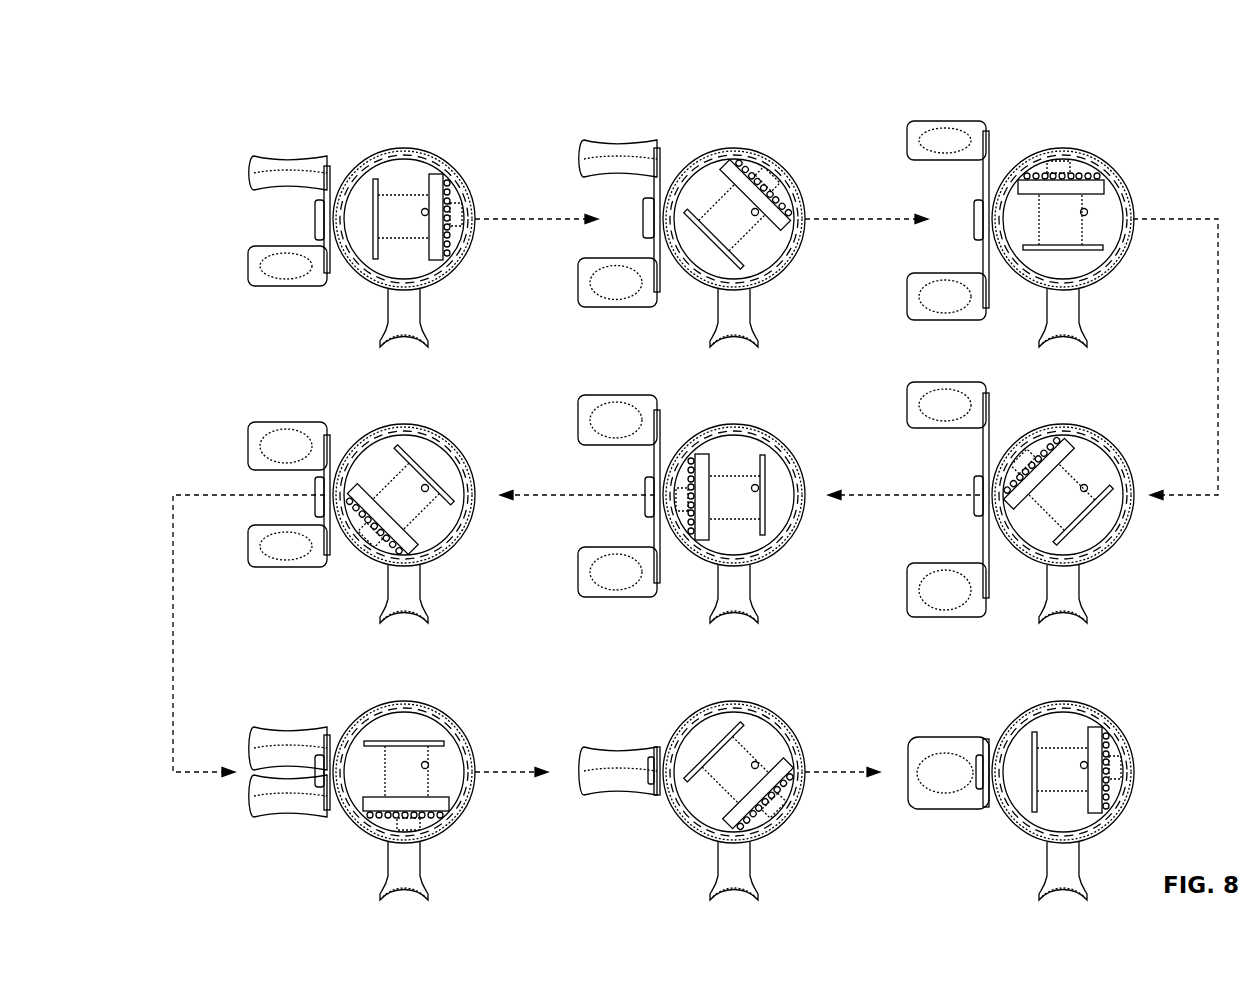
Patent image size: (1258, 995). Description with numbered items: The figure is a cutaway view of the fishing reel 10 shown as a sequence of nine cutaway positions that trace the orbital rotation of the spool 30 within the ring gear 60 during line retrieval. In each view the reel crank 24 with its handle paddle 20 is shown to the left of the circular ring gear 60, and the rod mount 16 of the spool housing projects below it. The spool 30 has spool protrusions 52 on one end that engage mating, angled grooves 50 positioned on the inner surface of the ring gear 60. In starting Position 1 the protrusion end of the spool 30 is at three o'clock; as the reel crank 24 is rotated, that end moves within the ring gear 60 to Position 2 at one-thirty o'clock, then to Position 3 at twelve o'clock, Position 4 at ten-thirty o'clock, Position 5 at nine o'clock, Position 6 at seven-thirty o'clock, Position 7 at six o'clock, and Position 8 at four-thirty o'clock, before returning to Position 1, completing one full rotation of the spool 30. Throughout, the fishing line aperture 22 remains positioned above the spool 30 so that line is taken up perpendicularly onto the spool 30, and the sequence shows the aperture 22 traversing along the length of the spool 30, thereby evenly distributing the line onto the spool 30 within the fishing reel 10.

The Position 1 is at (488, 288).
The Position 2 is at (798, 174).
The Position 3 is at (1076, 93).
The Position 4 is at (1008, 383).
The Position 5 is at (589, 472).
The Position 6 is at (358, 558).
The Position 7 is at (435, 857).
The Position 8 is at (768, 850).
The fishing reel 10 is at (296, 97).
The rod mount 16 is at (420, 333).
The handle paddle 20 is at (282, 170).
The fishing line aperture 22 is at (424, 209).
The reel crank 24 is at (330, 170).
The spool 30 is at (392, 203).
The angled grooves 50 is at (447, 187).
The spool protrusions 52 is at (452, 185).
The ring gear 60 is at (430, 152).